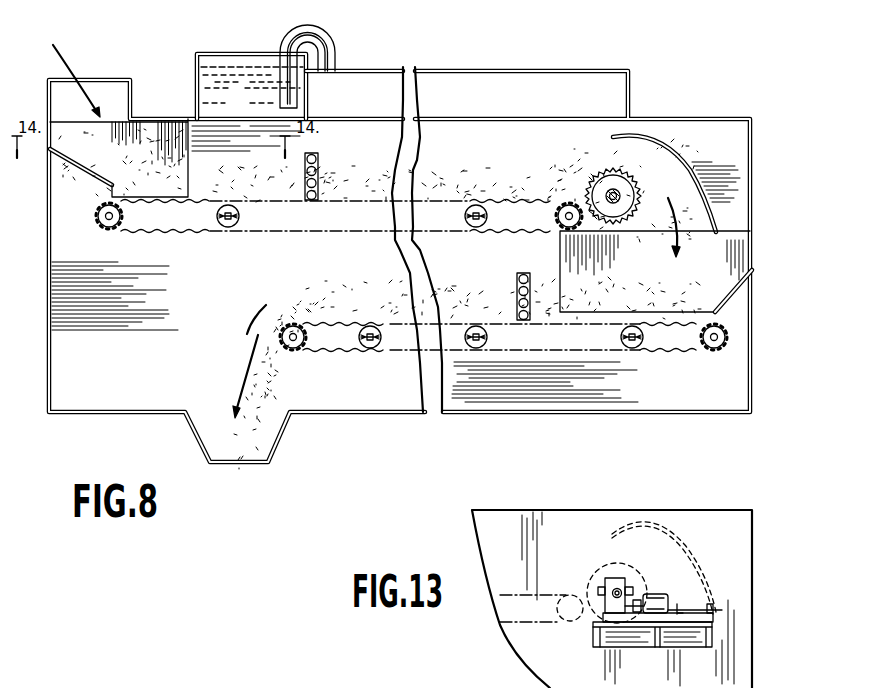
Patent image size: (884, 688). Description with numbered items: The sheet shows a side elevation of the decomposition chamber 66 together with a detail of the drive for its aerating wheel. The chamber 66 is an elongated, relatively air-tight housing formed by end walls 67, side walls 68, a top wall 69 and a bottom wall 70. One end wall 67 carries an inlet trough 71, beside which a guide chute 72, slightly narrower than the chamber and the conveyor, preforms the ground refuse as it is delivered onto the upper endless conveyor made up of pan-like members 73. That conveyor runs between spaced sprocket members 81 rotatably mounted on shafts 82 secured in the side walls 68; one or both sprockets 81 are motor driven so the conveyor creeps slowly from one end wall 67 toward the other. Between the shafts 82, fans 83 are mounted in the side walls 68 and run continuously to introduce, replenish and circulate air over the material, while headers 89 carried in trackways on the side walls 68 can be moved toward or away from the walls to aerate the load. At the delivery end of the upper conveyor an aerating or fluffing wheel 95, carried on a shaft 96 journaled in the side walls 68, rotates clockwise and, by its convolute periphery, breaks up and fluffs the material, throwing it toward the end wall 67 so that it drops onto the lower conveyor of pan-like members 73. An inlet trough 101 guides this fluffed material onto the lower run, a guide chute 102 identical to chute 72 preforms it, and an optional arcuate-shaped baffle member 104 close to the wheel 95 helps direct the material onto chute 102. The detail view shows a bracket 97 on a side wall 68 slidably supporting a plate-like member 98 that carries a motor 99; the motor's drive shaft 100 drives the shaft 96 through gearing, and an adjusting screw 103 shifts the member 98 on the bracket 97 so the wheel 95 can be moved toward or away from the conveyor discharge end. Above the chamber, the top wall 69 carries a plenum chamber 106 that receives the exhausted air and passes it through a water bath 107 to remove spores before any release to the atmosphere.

In FIG. 8, the decomposition chamber 66 is at (716, 83).
In FIG. 8, the end wall 67 is at (752, 240).
In FIG. 8, the side wall 68 is at (155, 348).
In FIG. 13, the side wall 68 is at (737, 659).
In FIG. 8, the top wall 69 is at (150, 118).
In FIG. 8, the bottom wall 70 is at (138, 411).
In FIG. 8, the inlet trough 71 is at (82, 176).
In FIG. 8, the guide chute 72 is at (172, 155).
In FIG. 8, the pan-like member 73 is at (435, 198).
In FIG. 8, the sprocket member 81 is at (122, 218).
In FIG. 8, the shaft 82 is at (99, 223).
In FIG. 8, the fan 83 is at (240, 218).
In FIG. 8, the header 89 is at (313, 158).
In FIG. 8, the inlet trough 101 is at (735, 293).
In FIG. 8, the guide chute 102 is at (729, 231).
In FIG. 8, the arcuate-shaped baffle member 104 is at (689, 160).
In FIG. 8, the plenum chamber 106 is at (384, 78).
In FIG. 8, the water bath 107 is at (200, 58).
In FIG. 13, the aerating or fluffing wheel 95 is at (594, 578).
In FIG. 13, the shaft 96 is at (620, 591).
In FIG. 13, the bracket 97 is at (680, 640).
In FIG. 13, the plate-like member 98 is at (677, 607).
In FIG. 13, the motor 99 is at (656, 596).
In FIG. 13, the drive shaft 100 is at (639, 613).
In FIG. 13, the adjusting screw 103 is at (711, 612).